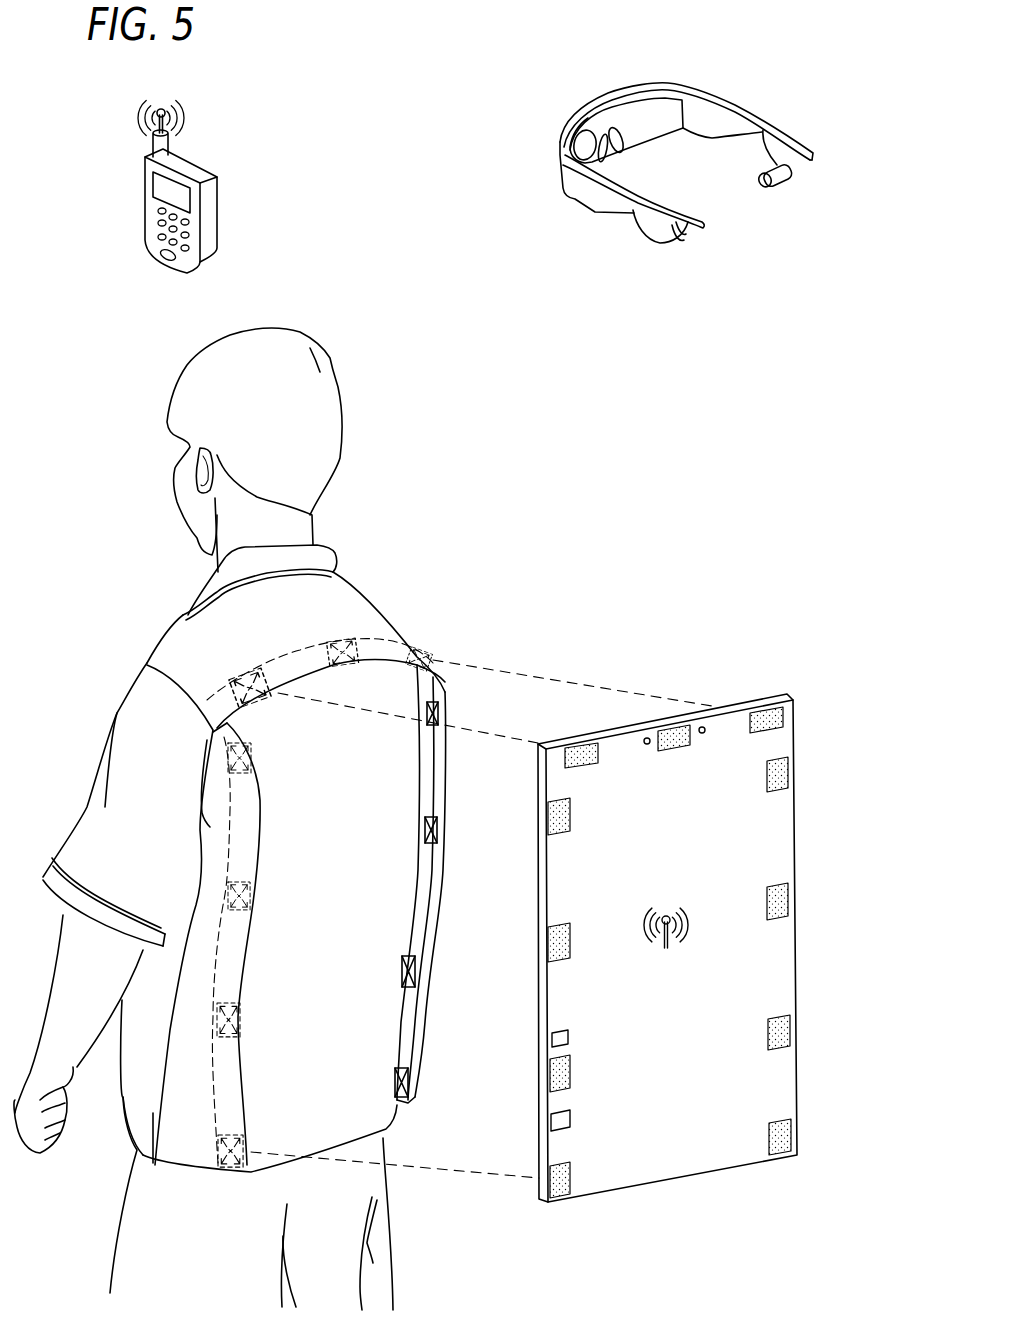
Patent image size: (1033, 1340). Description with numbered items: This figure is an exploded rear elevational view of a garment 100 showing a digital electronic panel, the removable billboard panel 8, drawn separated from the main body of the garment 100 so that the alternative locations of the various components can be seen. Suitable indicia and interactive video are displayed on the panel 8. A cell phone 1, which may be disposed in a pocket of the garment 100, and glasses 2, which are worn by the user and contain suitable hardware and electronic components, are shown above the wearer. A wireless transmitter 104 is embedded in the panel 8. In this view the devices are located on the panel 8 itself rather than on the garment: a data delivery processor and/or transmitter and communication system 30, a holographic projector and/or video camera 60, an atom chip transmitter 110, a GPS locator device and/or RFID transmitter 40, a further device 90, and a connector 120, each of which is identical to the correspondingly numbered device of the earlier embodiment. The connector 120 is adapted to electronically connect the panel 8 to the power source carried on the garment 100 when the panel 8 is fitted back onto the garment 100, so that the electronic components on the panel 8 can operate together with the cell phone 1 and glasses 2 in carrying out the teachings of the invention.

The cell phone 1 is at (143, 198).
The glasses 2 is at (703, 221).
The garment 100 is at (140, 715).
The removable billboard panel 8 is at (679, 1093).
The data delivery processor and/or transmitter and communication system 30 is at (630, 748).
The atom chip transmitter 110 is at (646, 737).
The holographic projector and/or video camera 60 is at (701, 726).
The GPS locator device and/or RFID transmitter 40 is at (740, 724).
The wireless transmitter 104 is at (692, 923).
The device 90 is at (552, 1038).
The connector 120 is at (552, 1123).